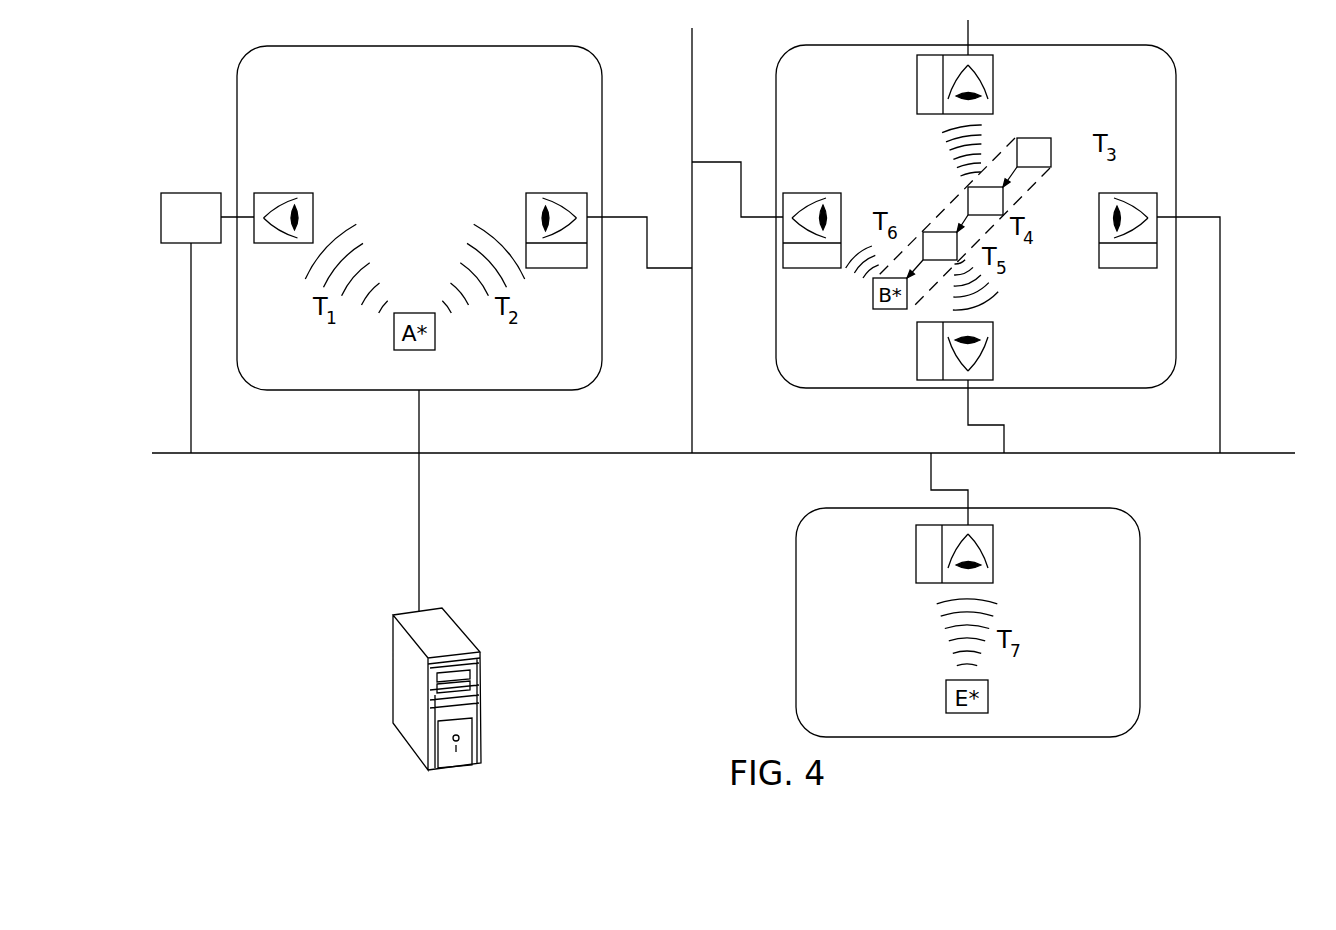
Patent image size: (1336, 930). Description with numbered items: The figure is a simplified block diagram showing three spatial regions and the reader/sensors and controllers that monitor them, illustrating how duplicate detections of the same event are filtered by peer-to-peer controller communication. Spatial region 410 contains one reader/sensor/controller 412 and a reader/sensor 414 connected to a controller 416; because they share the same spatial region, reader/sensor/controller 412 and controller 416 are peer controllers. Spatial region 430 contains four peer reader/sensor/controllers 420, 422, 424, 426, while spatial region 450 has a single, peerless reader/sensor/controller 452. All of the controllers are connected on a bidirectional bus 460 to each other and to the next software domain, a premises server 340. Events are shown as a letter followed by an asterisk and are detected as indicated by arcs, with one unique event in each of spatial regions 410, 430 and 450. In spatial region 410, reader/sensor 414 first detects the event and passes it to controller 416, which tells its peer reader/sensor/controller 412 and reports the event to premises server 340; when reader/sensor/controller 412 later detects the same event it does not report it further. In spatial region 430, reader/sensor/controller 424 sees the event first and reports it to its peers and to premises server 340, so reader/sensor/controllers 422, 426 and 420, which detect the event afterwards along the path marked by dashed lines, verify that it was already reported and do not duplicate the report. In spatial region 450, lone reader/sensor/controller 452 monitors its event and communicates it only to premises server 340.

The premises server 340 is at (481, 710).
The spatial region 410 is at (513, 390).
The reader/sensor/controller 412 is at (557, 193).
The reader/sensor 414 is at (278, 193).
The controller 416 is at (210, 193).
The reader/sensor/controller 420 is at (812, 193).
The reader/sensor/controller 422 is at (993, 82).
The reader/sensor/controller 424 is at (1145, 193).
The reader/sensor/controller 426 is at (993, 357).
The spatial region 430 is at (1176, 107).
The spatial region 450 is at (1140, 664).
The reader/sensor/controller 452 is at (993, 554).
The bidirectional bus 460 is at (1220, 335).